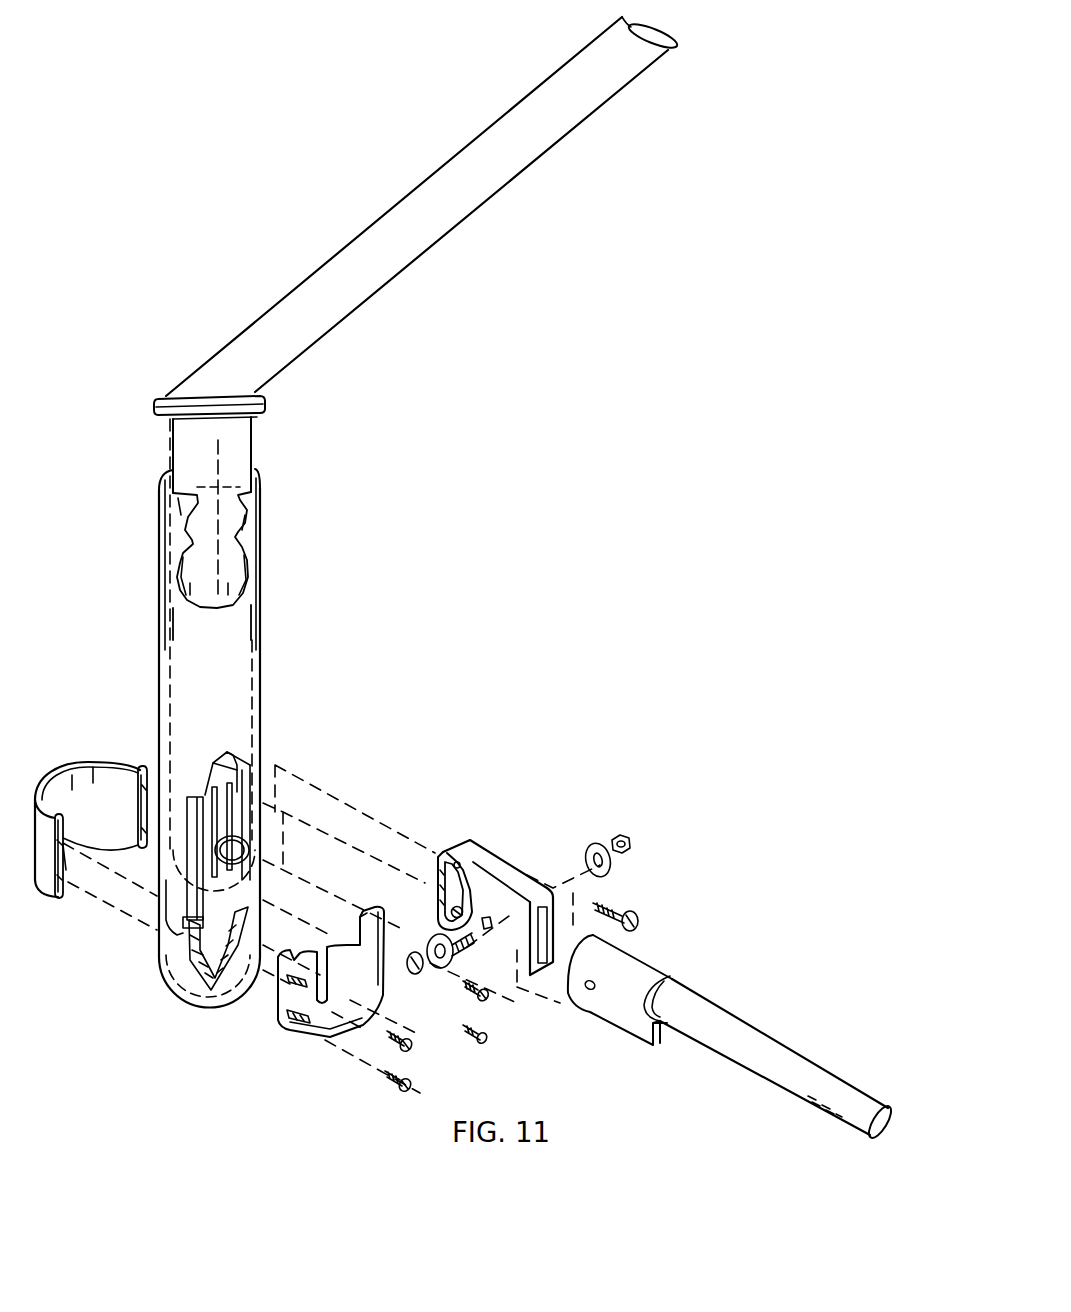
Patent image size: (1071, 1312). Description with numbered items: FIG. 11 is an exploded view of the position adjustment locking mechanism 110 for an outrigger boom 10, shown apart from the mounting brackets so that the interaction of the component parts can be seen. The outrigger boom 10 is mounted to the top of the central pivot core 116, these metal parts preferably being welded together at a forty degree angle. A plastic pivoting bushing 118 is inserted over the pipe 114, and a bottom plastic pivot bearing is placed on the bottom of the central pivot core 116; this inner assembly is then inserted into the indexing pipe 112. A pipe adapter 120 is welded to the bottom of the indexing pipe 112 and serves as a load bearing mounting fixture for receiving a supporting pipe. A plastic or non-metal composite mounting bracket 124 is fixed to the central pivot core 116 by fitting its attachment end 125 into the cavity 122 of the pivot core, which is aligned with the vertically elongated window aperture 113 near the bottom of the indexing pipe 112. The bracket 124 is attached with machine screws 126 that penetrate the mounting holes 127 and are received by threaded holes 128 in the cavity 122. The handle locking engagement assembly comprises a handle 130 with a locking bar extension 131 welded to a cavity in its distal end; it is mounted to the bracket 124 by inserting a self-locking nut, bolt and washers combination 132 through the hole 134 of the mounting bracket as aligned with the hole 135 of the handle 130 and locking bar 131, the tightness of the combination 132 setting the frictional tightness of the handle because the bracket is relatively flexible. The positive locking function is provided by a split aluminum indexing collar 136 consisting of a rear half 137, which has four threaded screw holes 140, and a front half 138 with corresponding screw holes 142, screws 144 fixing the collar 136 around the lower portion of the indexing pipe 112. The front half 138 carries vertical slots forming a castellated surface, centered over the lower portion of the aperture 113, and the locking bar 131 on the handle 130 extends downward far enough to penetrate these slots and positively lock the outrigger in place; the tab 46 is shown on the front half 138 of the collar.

The outrigger boom 10 is at (467, 257).
The locking assembly 110 is at (140, 440).
The indexing pipe 112 is at (262, 613).
The vertically elongated window aperture 113 is at (202, 807).
The pipe 114 is at (257, 455).
The central pivot core 116 is at (233, 773).
The plastic pivoting bushing 118 is at (270, 413).
The pipe adapter 120 is at (167, 977).
The cavity 122 is at (258, 773).
The mounting bracket 124 is at (477, 874).
The attachment end 125 is at (452, 845).
The machine screws 126 is at (432, 897).
The mounting holes 127 is at (459, 860).
The threaded holes 128 is at (220, 838).
The handle 130 is at (688, 1025).
The locking bar extension 131 is at (633, 1020).
The self-locking nut, bolt, and washers combination 132 is at (630, 848).
The hole of the mounting bracket 134 is at (488, 926).
The hole of the handle/locking bar 135 is at (597, 984).
The split aluminum indexing collar 136 is at (277, 1052).
The rear half 137 is at (87, 762).
The front half 138 is at (294, 1006).
The threaded screw holes 140 is at (63, 847).
The screw holes 142 is at (252, 1023).
The screws 144 is at (478, 1038).
The tab 46 is at (323, 957).